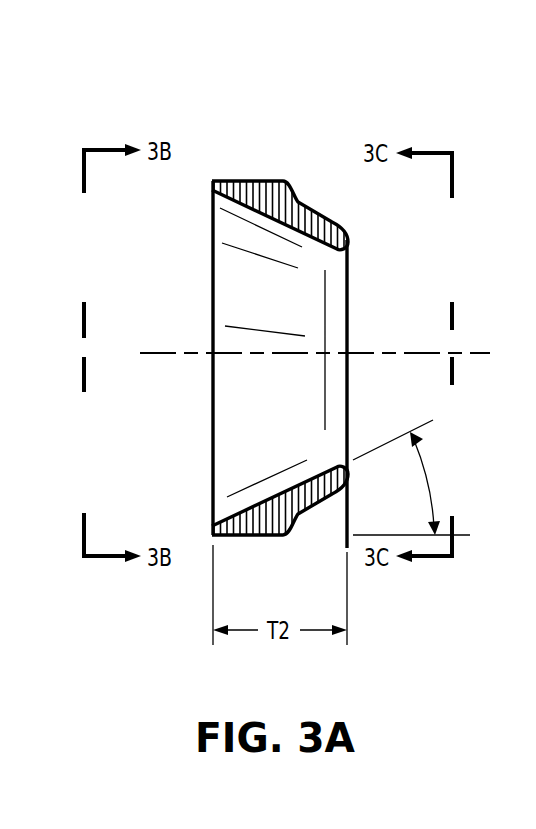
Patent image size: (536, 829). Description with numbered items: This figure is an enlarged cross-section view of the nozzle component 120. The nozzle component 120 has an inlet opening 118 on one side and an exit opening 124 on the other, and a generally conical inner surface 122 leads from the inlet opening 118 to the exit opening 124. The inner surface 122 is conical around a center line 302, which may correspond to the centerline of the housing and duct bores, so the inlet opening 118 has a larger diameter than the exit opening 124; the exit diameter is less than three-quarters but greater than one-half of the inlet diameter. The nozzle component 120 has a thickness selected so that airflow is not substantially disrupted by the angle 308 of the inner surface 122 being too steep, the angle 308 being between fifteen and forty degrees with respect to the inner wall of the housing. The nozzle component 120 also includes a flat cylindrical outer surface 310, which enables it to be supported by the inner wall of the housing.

The nozzle component 120 is at (156, 114).
The inlet opening 118 is at (206, 427).
The inner surface 122 is at (288, 415).
The exit opening 124 is at (354, 346).
The center line 302 is at (461, 353).
The angle 308 is at (430, 480).
The flat cylindrical outer surface 310 is at (243, 181).